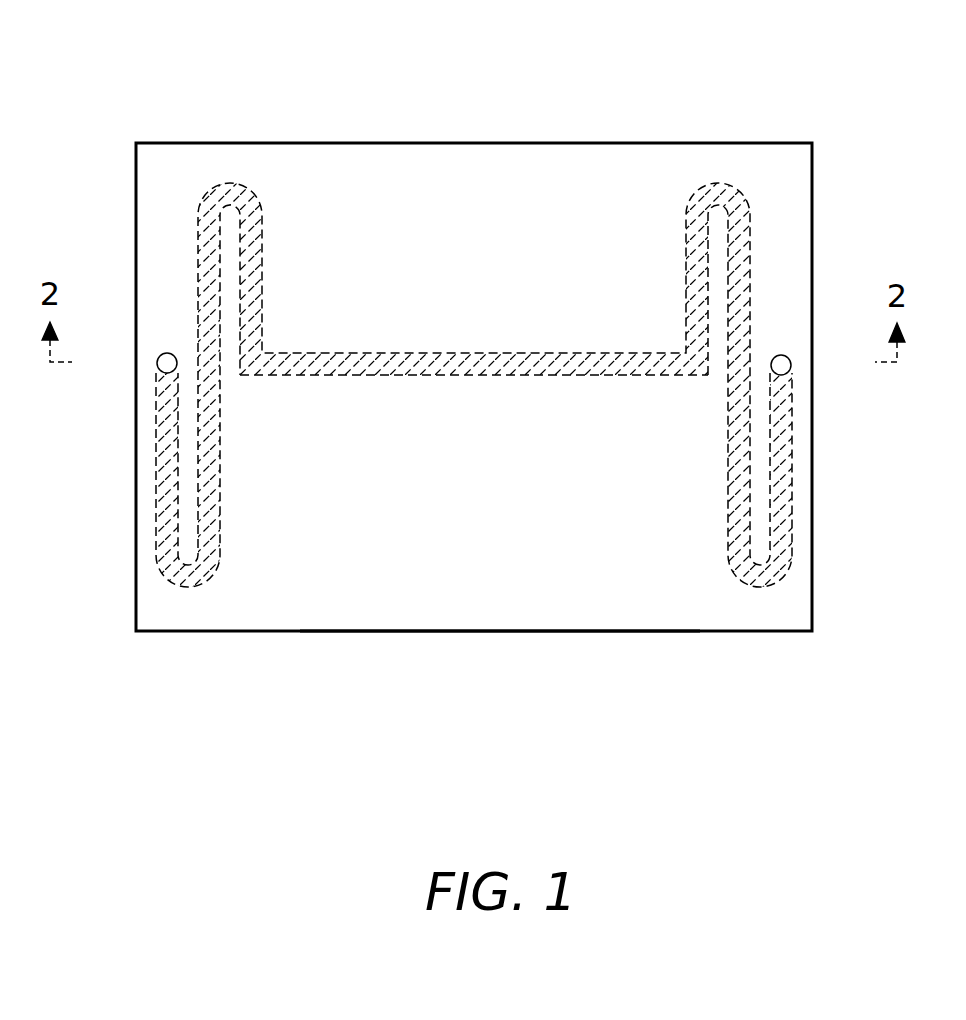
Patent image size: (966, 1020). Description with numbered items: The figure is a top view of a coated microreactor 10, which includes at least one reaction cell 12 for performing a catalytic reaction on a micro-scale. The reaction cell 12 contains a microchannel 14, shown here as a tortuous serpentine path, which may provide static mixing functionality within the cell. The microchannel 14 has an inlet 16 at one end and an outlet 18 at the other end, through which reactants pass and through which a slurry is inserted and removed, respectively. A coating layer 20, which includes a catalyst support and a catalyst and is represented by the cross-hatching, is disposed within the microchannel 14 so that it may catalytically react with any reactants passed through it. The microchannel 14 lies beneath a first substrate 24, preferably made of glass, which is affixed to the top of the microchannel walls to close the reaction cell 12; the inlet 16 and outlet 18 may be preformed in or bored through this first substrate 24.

The coated microreactor 10 is at (862, 160).
The reaction cell 12 is at (599, 142).
The microchannel 14 is at (350, 352).
The inlet 16 is at (167, 352).
The outlet 18 is at (781, 354).
The coating layer 20 is at (468, 352).
The first substrate 24 is at (488, 613).